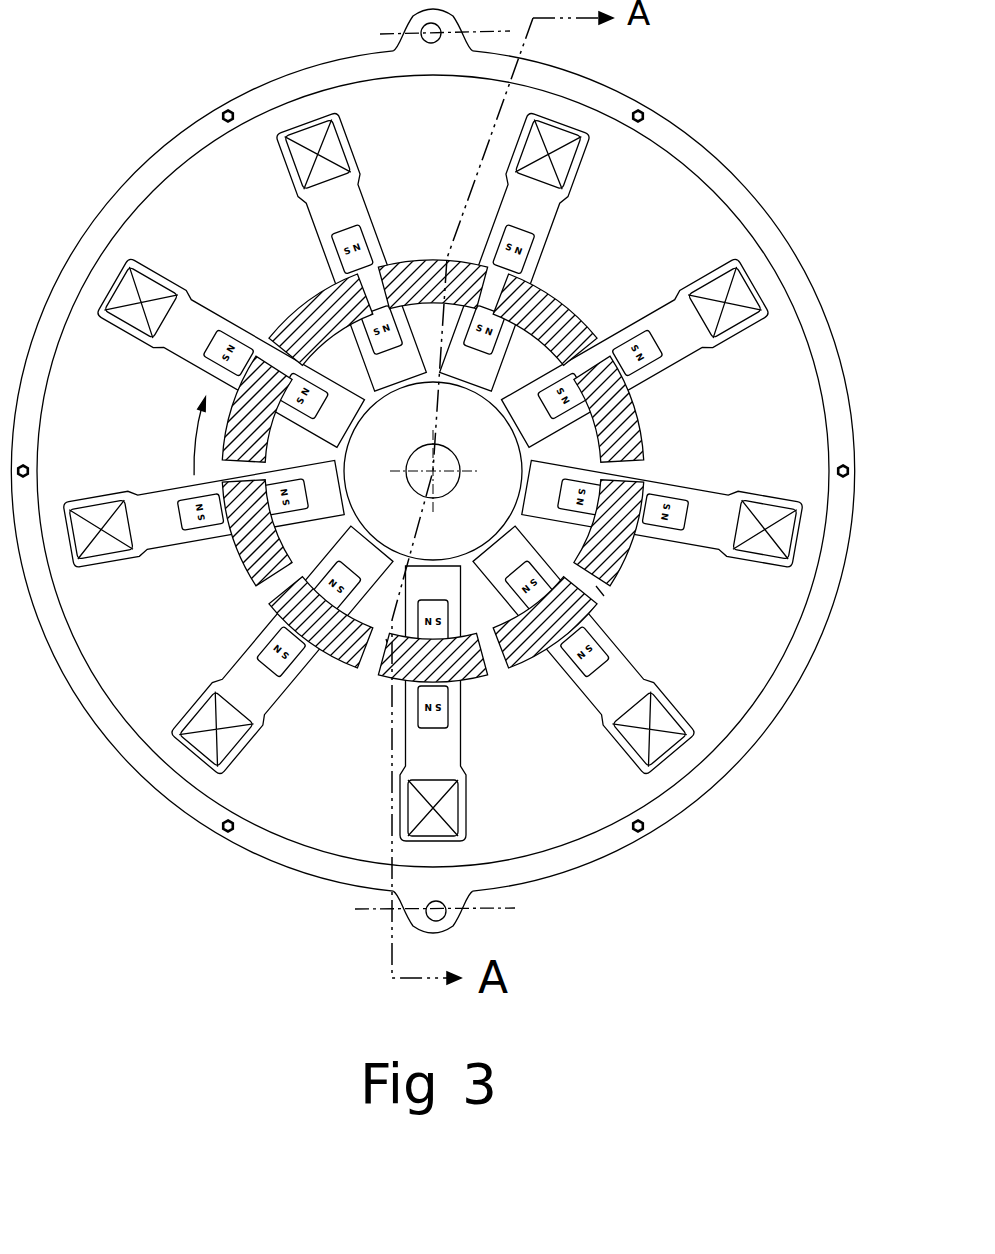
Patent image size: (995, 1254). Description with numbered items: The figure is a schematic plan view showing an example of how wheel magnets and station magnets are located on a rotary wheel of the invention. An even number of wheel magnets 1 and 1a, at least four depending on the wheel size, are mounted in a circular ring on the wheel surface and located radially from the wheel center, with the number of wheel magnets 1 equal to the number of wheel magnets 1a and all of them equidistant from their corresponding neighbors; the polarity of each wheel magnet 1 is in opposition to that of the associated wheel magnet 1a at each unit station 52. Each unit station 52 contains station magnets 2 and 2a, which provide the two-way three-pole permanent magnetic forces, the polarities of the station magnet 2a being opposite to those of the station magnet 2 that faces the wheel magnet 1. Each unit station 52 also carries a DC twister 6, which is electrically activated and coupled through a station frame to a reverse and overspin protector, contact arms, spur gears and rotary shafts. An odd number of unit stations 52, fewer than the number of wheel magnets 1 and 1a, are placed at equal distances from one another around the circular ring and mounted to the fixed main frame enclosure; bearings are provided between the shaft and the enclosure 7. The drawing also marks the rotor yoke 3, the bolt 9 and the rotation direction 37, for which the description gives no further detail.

The wheel magnet 1 is at (302, 313).
The wheel magnet 1a is at (413, 273).
The station magnet 2 is at (355, 237).
The station magnet 2a is at (343, 577).
The rotor yoke 3 is at (598, 590).
The DC twister 6 is at (725, 292).
The enclosure 7 is at (183, 145).
The bolt 9 is at (648, 114).
The rotation direction 37 is at (196, 432).
The unit station 52 is at (548, 225).